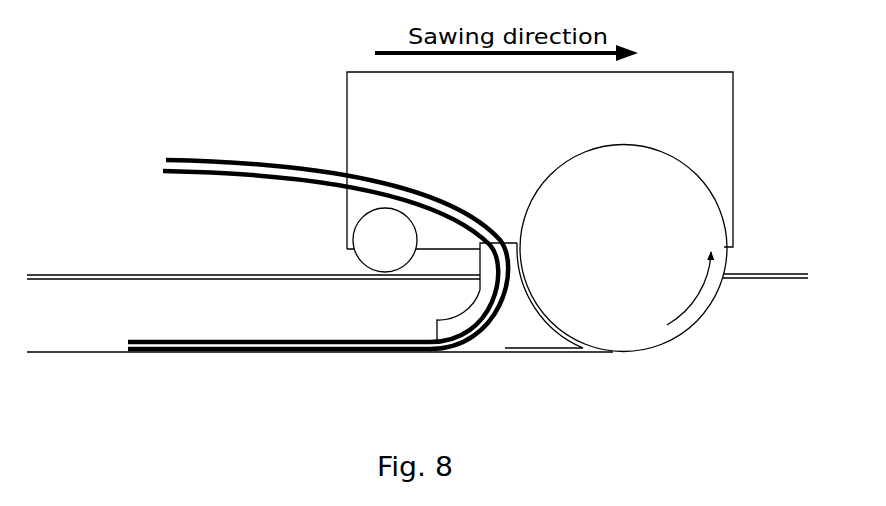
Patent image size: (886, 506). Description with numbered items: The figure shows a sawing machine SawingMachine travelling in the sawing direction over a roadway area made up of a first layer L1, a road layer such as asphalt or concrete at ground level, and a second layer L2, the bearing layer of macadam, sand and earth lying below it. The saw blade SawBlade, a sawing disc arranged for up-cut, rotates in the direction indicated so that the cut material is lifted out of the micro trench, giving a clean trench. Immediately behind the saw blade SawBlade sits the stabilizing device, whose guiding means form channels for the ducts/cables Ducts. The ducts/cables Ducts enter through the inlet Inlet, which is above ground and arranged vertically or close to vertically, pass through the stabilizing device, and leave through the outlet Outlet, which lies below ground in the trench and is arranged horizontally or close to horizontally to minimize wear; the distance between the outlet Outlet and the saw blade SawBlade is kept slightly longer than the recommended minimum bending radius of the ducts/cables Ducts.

The first layer L1 is at (417, 265).
The second layer L2 is at (320, 330).
The inlet Inlet is at (508, 238).
The outlet Outlet is at (432, 328).
The saw blade SawBlade is at (623, 248).
The sawing machine SawingMachine is at (540, 160).
The ducts/cables Ducts is at (211, 167).